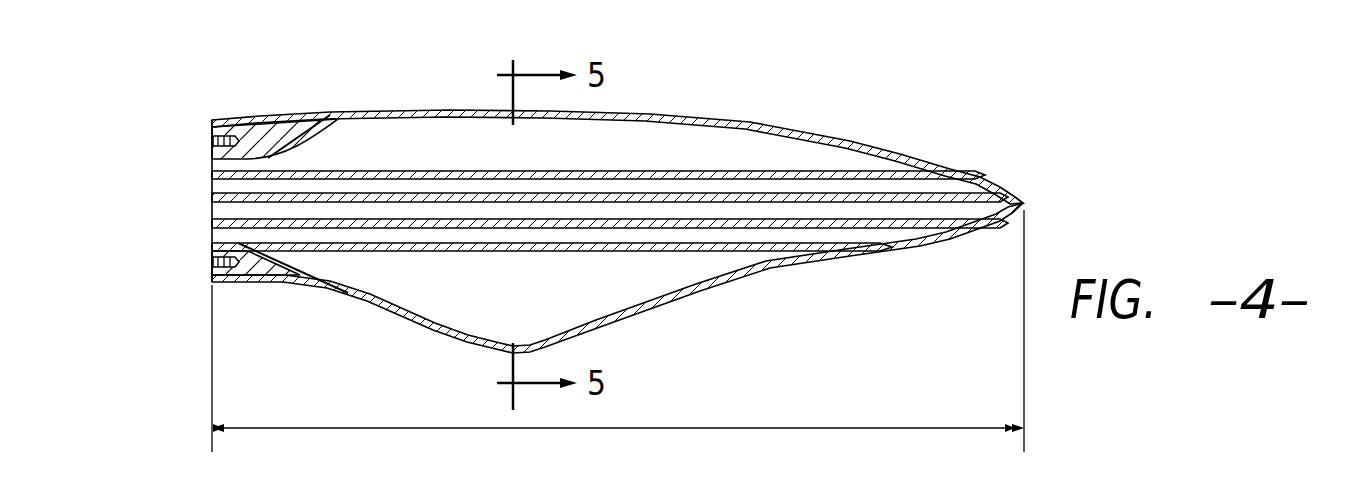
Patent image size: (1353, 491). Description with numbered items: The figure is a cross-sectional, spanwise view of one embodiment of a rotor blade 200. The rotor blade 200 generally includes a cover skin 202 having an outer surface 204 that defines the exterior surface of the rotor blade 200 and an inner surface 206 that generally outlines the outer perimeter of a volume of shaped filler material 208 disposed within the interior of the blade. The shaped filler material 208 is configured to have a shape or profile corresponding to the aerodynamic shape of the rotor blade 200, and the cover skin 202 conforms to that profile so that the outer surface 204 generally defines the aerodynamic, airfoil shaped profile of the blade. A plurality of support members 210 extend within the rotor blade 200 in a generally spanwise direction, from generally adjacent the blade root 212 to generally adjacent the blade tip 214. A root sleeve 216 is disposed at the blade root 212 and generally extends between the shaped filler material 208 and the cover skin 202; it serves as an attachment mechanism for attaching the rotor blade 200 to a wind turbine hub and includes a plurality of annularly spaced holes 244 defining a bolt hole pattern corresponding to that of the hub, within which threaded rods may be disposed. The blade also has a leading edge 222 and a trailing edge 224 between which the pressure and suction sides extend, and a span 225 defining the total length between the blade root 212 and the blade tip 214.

The rotor blade 200 is at (1004, 110).
The cover skin 202 is at (384, 103).
The outer surface 204 is at (463, 112).
The inner surface 206 is at (800, 130).
The shaped filler material 208 is at (858, 155).
The support members 210 is at (913, 171).
The blade root 212 is at (234, 289).
The blade tip 214 is at (1028, 211).
The root sleeve 216 is at (277, 137).
The leading edge 222 is at (752, 120).
The trailing edge 224 is at (752, 278).
The span 225 is at (880, 428).
The annularly spaced holes 244 is at (220, 135).